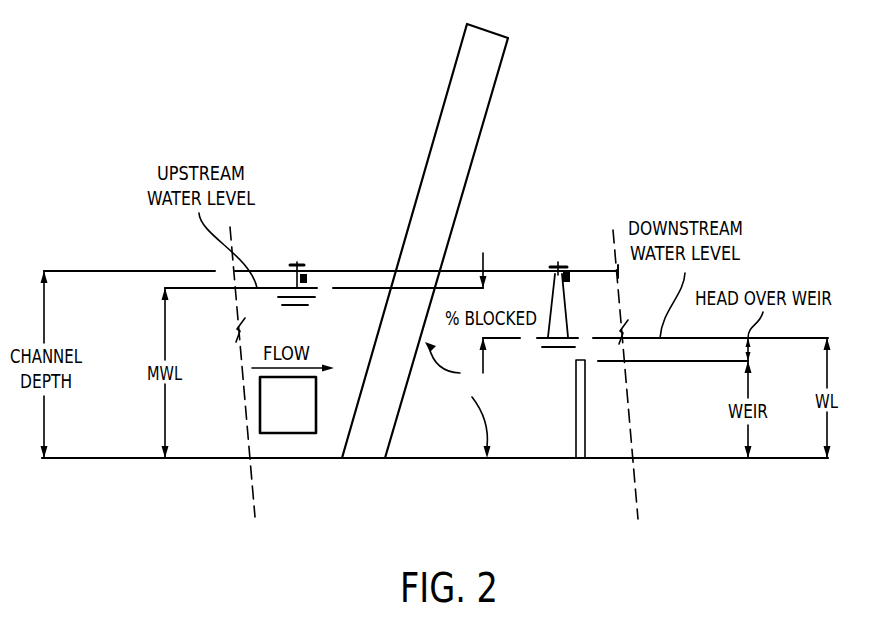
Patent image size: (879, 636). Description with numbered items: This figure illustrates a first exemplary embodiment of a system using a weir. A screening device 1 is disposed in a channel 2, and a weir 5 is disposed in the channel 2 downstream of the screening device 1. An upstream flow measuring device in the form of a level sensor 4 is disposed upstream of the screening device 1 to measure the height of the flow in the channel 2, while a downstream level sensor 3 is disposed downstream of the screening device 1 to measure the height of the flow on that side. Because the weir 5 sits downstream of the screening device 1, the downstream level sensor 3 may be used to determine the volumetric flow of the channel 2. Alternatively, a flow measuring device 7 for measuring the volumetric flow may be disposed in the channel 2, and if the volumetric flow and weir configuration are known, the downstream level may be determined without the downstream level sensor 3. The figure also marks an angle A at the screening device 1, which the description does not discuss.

The screening device 1 is at (503, 67).
The channel 2 is at (214, 443).
The downstream level sensor 3 is at (558, 266).
The level sensor 4 is at (298, 262).
The weir 5 is at (570, 439).
The flow measuring device 7 is at (285, 443).
The screen inclination angle A is at (458, 400).